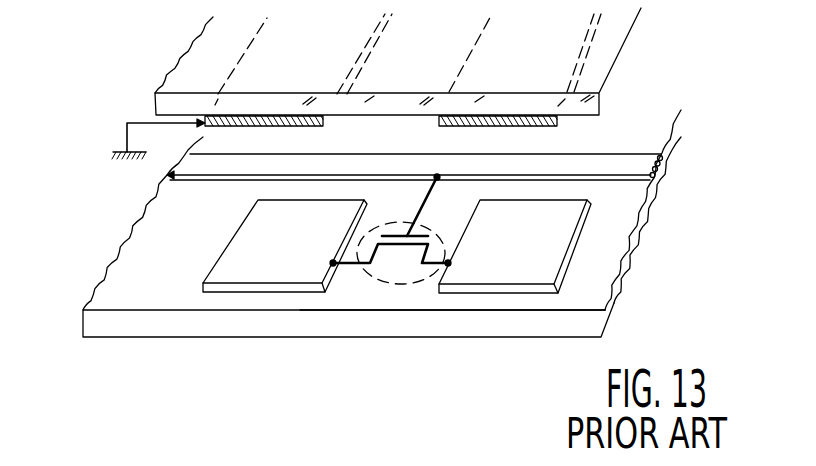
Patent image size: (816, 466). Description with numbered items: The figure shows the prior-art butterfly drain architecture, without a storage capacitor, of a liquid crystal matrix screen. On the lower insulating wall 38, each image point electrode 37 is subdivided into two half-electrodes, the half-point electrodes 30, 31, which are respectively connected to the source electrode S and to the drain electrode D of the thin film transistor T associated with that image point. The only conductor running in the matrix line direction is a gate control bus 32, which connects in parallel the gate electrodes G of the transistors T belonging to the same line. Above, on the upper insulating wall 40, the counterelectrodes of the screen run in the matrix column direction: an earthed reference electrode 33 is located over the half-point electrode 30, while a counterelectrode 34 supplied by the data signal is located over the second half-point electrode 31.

The upper insulating wall 40 is at (170, 102).
The earthed reference electrode 33 is at (318, 121).
The counterelectrode supplied by the data signal 34 is at (546, 121).
The gate control bus 32 is at (612, 171).
The half-point electrode 30 is at (263, 277).
The half-point electrode 31 is at (515, 276).
The image point electrode 37 is at (429, 328).
The lower insulating wall 38 is at (197, 325).